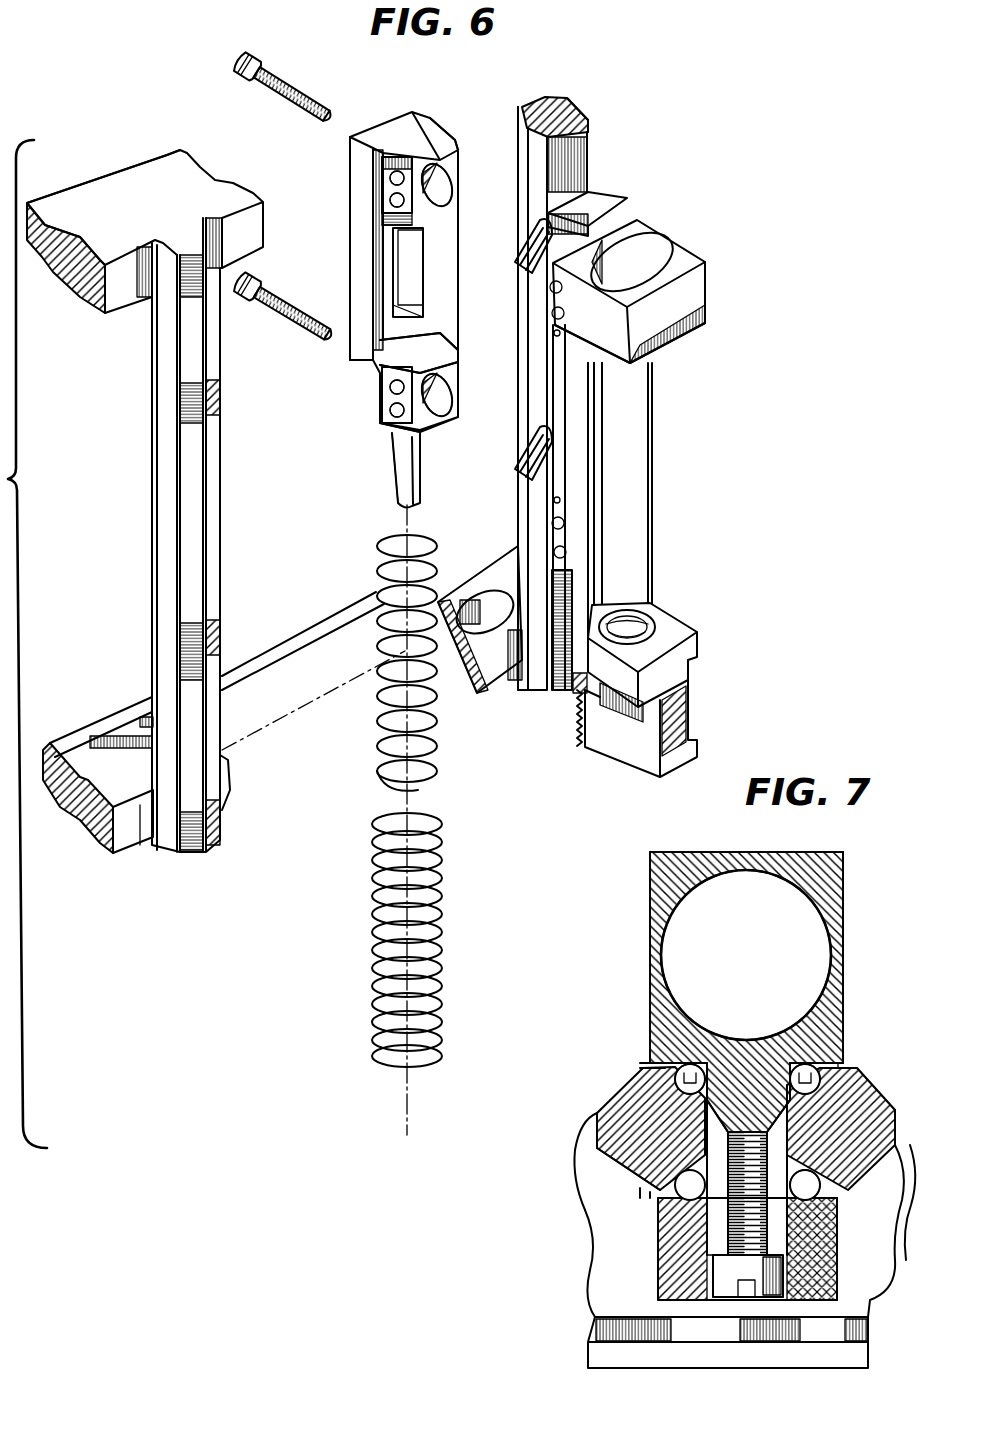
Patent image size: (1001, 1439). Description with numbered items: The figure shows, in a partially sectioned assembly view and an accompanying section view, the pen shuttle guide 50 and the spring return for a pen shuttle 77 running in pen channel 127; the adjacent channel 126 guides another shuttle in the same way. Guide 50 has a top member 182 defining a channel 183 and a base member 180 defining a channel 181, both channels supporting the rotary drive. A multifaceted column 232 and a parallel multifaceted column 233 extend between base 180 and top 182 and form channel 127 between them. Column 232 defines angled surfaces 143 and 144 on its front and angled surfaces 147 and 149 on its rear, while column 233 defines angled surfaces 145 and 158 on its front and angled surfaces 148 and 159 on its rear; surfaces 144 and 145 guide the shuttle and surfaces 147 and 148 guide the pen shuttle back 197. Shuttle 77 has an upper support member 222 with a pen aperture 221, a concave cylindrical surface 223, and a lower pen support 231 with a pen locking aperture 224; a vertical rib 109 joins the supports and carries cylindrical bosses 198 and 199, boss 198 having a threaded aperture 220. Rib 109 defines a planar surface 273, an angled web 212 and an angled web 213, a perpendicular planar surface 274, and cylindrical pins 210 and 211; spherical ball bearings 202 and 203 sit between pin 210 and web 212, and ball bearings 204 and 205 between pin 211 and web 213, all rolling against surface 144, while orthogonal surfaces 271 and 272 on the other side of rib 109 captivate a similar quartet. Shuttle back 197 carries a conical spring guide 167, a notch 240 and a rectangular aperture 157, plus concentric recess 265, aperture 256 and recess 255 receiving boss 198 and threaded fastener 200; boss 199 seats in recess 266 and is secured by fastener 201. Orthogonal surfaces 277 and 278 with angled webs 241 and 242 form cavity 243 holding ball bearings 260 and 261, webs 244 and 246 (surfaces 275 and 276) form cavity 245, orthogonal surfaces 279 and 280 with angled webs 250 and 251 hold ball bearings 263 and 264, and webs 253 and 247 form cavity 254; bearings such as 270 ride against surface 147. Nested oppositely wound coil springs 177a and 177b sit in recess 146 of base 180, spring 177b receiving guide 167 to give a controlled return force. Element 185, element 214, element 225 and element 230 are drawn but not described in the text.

In FIG. 6, the pen shuttle guide 50 is at (97, 170).
In FIG. 7, the pen shuttle 77 is at (847, 907).
In FIG. 6, the vertical rib 109 is at (563, 367).
In FIG. 7, the vertical rib 109 is at (650, 1140).
In FIG. 6, the channel 126 is at (147, 833).
In FIG. 6, the pen channel 127 is at (227, 810).
In FIG. 6, the angled surface 143 is at (190, 262).
In FIG. 7, the angled surface 143 is at (887, 1100).
In FIG. 6, the angled guide surface 144 is at (262, 240).
In FIG. 7, the angled guide surface 144 is at (760, 1050).
In FIG. 6, the angled guide surface 145 is at (560, 167).
In FIG. 7, the angled guide surface 145 is at (640, 1075).
In FIG. 6, the recess 146 is at (487, 597).
In FIG. 6, the guide surface 147 is at (227, 437).
In FIG. 7, the guide surface 147 is at (828, 1260).
In FIG. 6, the guide surface 148 is at (518, 125).
In FIG. 7, the guide surface 148 is at (660, 1175).
In FIG. 6, the angled surface 149 is at (152, 383).
In FIG. 7, the angled surface 149 is at (873, 1157).
In FIG. 6, the rectangular aperture 157 is at (415, 273).
In FIG. 6, the angled surface 158 is at (588, 125).
In FIG. 6, the angled surface 159 is at (552, 100).
In FIG. 6, the conical spring guide 167 is at (398, 458).
In FIG. 6, the coil spring 177a is at (372, 905).
In FIG. 6, the coil spring 177b is at (377, 717).
In FIG. 6, the base member 180 is at (128, 827).
In FIG. 7, the base member 180 is at (647, 1295).
In FIG. 6, the channel 181 is at (82, 747).
In FIG. 6, the top member 182 is at (168, 178).
In FIG. 6, the channel 183 is at (43, 270).
In FIG. 6, the window wall 185 is at (405, 300).
In FIG. 6, the pen shuttle back 197 is at (505, 88).
In FIG. 6, the cylindrical boss 198 is at (532, 255).
In FIG. 7, the cylindrical boss 198 is at (853, 1083).
In FIG. 6, the cylindrical boss 199 is at (563, 482).
In FIG. 6, the threaded fastener 200 is at (302, 97).
In FIG. 7, the threaded fastener 200 is at (760, 1293).
In FIG. 6, the fastener 201 is at (303, 312).
In FIG. 6, the spherical ball bearing 202 is at (640, 350).
In FIG. 7, the spherical ball bearing 202 is at (843, 1013).
In FIG. 6, the spherical ball bearing 203 is at (632, 364).
In FIG. 6, the ball bearing 204 is at (563, 520).
In FIG. 6, the ball bearing 205 is at (567, 552).
In FIG. 6, the cylindrical pin 210 is at (562, 366).
In FIG. 7, the cylindrical pin 210 is at (805, 1063).
In FIG. 6, the cylindrical pin 211 is at (548, 470).
In FIG. 6, the angled web 212 is at (554, 281).
In FIG. 6, the angled web 213 is at (567, 597).
In FIG. 7, the angled web 213 is at (843, 1055).
In FIG. 7, the plate 214 is at (657, 1068).
In FIG. 7, the threaded aperture 220 is at (660, 1245).
In FIG. 6, the pen aperture 221 is at (657, 260).
In FIG. 7, the pen aperture 221 is at (707, 883).
In FIG. 6, the upper support member 222 is at (697, 293).
In FIG. 7, the upper support member 222 is at (833, 857).
In FIG. 6, the concave cylindrical surface 223 is at (633, 425).
In FIG. 6, the pen locking aperture 224 is at (655, 616).
In FIG. 7, the plate 225 is at (660, 1063).
In FIG. 7, the ball 230 is at (686, 1063).
In FIG. 6, the lower pen support 231 is at (607, 733).
In FIG. 6, the multifaceted column 232 is at (148, 477).
In FIG. 7, the multifaceted column 232 is at (907, 1230).
In FIG. 6, the multifaceted column 233 is at (600, 178).
In FIG. 7, the multifaceted column 233 is at (643, 1162).
In FIG. 6, the notch 240 is at (386, 230).
In FIG. 6, the angled web 241 is at (393, 160).
In FIG. 6, the angled web 242 is at (385, 220).
In FIG. 6, the cavity 243 is at (397, 157).
In FIG. 7, the cavity 243 is at (825, 1233).
In FIG. 6, the web 244 is at (458, 140).
In FIG. 6, the cavity 245 is at (459, 174).
In FIG. 7, the cavity 245 is at (660, 1225).
In FIG. 6, the web 246 is at (455, 197).
In FIG. 6, the web 247 is at (450, 405).
In FIG. 6, the angled web 250 is at (385, 372).
In FIG. 6, the angled web 251 is at (380, 428).
In FIG. 6, the web 253 is at (448, 337).
In FIG. 6, the cavity 254 is at (430, 355).
In FIG. 7, the recess 255 is at (683, 1295).
In FIG. 7, the aperture 256 is at (660, 1293).
In FIG. 6, the spherical ball bearing 260 is at (385, 176).
In FIG. 7, the spherical ball bearing 260 is at (818, 1215).
In FIG. 6, the spherical ball bearing 261 is at (392, 200).
In FIG. 6, the ball bearing 263 is at (388, 386).
In FIG. 6, the ball bearing 264 is at (395, 412).
In FIG. 6, the recess 265 is at (440, 203).
In FIG. 7, the recess 265 is at (725, 1250).
In FIG. 6, the recess 266 is at (440, 412).
In FIG. 7, the ball bearing 270 is at (567, 1207).
In FIG. 7, the orthogonal surface 271 is at (695, 1063).
In FIG. 7, the orthogonal surface 272 is at (713, 1060).
In FIG. 6, the planar surface 273 is at (563, 413).
In FIG. 7, the planar surface 273 is at (773, 1058).
In FIG. 6, the planar surface 274 is at (562, 507).
In FIG. 7, the planar surface 274 is at (815, 1052).
In FIG. 7, the surface 275 is at (675, 1188).
In FIG. 7, the surface 276 is at (590, 1143).
In FIG. 6, the orthogonal surface 277 is at (392, 186).
In FIG. 7, the orthogonal surface 277 is at (820, 1190).
In FIG. 6, the orthogonal surface 278 is at (420, 200).
In FIG. 7, the orthogonal surface 278 is at (893, 1135).
In FIG. 6, the orthogonal surface 279 is at (392, 402).
In FIG. 6, the orthogonal surface 280 is at (428, 437).